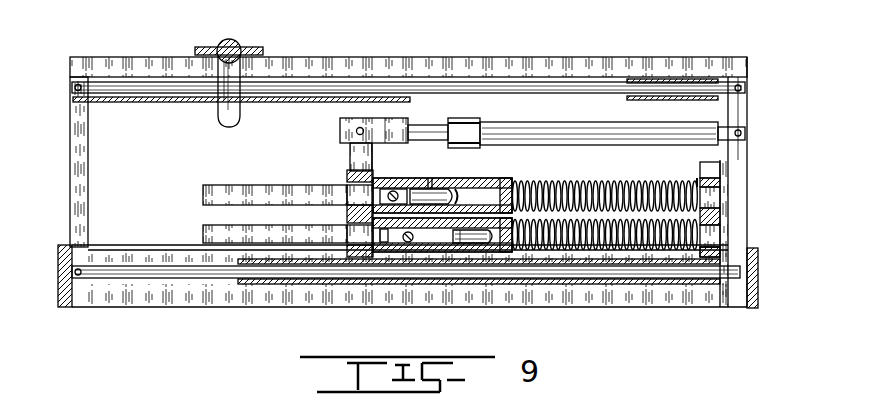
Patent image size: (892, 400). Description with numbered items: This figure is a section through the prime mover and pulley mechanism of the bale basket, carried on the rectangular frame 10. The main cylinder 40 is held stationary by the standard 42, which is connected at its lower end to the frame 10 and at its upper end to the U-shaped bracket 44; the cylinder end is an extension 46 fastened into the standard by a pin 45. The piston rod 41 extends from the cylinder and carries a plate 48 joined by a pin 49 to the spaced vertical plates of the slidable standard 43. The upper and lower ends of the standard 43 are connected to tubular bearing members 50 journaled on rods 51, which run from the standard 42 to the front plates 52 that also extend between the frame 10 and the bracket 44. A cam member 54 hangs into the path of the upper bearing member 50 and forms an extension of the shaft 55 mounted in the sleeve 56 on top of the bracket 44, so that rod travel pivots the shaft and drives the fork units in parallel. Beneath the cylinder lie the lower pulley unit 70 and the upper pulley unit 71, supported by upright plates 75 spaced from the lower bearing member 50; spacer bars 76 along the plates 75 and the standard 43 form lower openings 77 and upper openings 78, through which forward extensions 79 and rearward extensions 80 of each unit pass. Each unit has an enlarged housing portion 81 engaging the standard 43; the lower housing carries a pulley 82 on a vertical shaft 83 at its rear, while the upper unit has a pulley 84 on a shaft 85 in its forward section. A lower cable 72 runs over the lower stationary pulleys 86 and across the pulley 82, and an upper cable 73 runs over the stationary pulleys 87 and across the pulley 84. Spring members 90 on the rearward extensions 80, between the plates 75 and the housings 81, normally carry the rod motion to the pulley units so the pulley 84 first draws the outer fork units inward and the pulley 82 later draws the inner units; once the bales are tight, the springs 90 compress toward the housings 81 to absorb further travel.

The rectangular frame 10 is at (752, 300).
The main cylinder 40 is at (508, 122).
The piston rod 41 is at (428, 125).
The standard 42 is at (744, 105).
The standard 43 is at (362, 118).
The U-shaped bracket 44 is at (557, 57).
The pin 45 is at (742, 135).
The extension 46 is at (745, 128).
The plate 48 is at (385, 125).
The pin 49 is at (360, 128).
The tubular bearing member 50 is at (268, 102).
The shaft or rod 51 is at (133, 82).
The front plate 52 is at (72, 140).
The cam member 54 is at (218, 108).
The shaft 55 is at (225, 42).
The sleeve 56 is at (234, 42).
The lower pulley unit 70 is at (509, 245).
The upper pulley unit 71 is at (512, 177).
The linking member 72 is at (410, 243).
The linking member 73 is at (388, 243).
The upright plate 75 is at (720, 170).
The spacer bar 76 is at (373, 180).
The lower opening 77 is at (347, 232).
The upper opening 78 is at (348, 188).
The extension 79 is at (203, 194).
The rearward extension 80 is at (697, 185).
The housing portion 81 is at (448, 188).
The pulley 82 is at (490, 250).
The vertical shaft 83 is at (472, 246).
The pulley 84 is at (460, 190).
The shaft 85 is at (430, 183).
The lower stationary pulley 86 is at (393, 243).
The pulley 87 is at (350, 176).
The spring member 90 is at (578, 180).